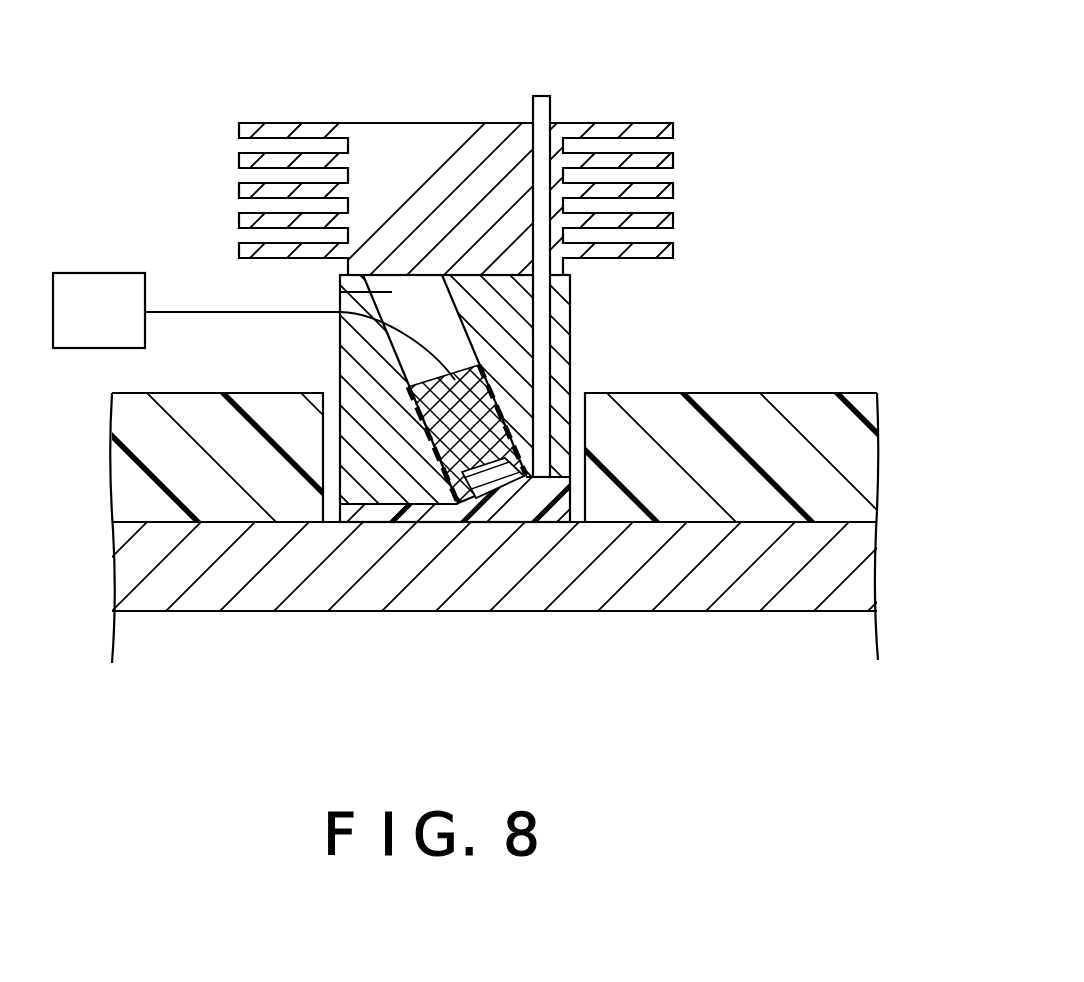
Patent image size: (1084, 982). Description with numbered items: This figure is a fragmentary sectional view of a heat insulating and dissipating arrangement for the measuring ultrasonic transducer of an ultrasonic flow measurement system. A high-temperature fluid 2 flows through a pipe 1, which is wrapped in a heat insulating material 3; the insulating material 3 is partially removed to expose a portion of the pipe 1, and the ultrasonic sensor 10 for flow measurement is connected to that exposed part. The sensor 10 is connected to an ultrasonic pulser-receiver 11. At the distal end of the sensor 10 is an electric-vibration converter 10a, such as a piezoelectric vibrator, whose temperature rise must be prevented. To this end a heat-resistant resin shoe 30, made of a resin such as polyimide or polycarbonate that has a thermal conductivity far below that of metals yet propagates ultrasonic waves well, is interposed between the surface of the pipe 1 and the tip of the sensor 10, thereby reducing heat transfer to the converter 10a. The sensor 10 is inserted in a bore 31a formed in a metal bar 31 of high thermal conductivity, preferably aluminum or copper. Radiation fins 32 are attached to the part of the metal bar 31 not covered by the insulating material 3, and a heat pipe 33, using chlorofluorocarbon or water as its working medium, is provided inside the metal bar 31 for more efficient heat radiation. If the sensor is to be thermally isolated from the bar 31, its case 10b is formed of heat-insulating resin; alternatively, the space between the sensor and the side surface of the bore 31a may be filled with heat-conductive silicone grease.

The pipe 1 is at (862, 576).
The high-temperature fluid 2 is at (783, 700).
The heat insulating material 3 is at (862, 462).
The ultrasonic sensor 10 is at (497, 377).
The electric-vibration converter 10a is at (486, 497).
The case 10b is at (497, 403).
The ultrasonic pulser-receiver 11 is at (254, 326).
The heat-resistant resin shoe 30 is at (543, 502).
The metal bar 31 is at (340, 348).
The bore 31a is at (340, 292).
The radiation fins 32 is at (670, 127).
The heat pipe 33 is at (541, 95).